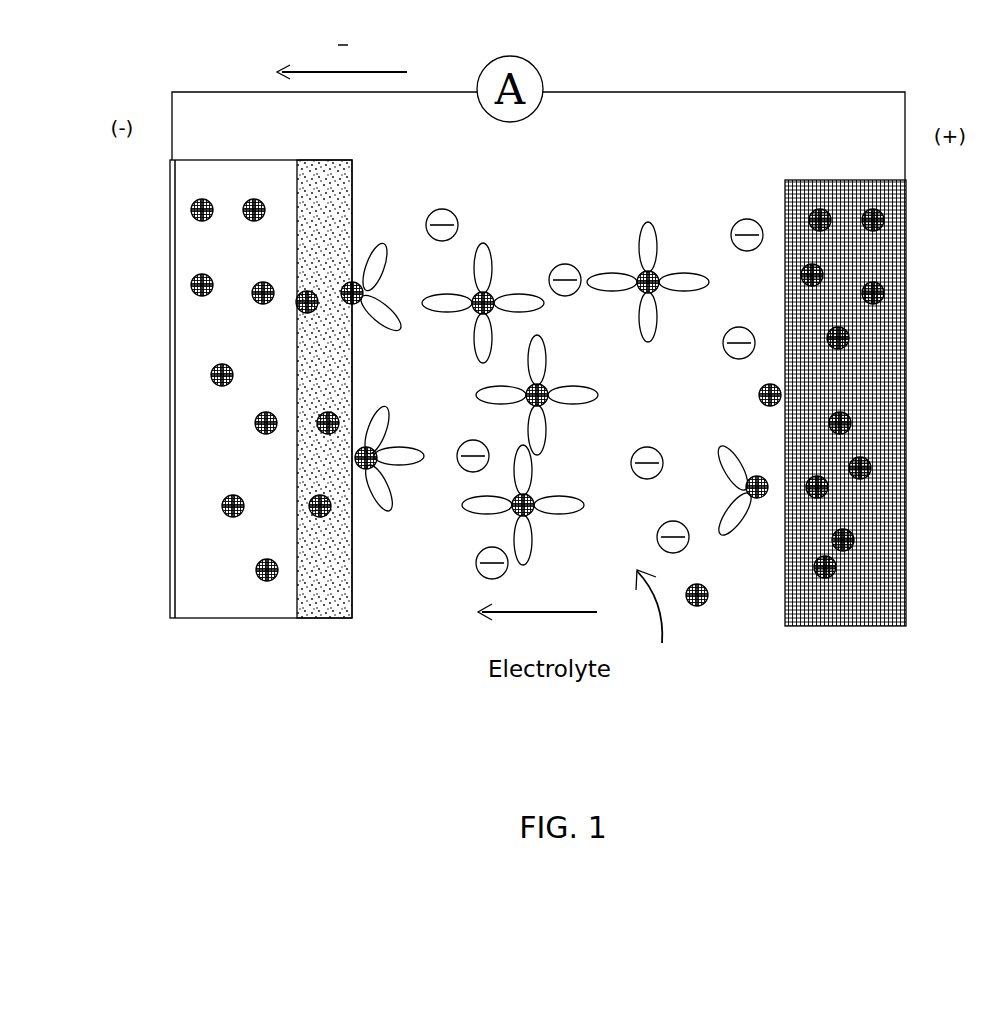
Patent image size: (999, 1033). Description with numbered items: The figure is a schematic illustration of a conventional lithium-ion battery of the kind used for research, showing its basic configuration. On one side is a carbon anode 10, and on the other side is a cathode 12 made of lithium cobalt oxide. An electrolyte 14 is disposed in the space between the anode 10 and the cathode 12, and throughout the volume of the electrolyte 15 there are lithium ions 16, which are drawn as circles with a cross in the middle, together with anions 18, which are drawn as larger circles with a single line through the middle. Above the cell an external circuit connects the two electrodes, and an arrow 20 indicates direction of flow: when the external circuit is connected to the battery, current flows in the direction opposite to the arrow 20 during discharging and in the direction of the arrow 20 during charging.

The anode 10 is at (246, 607).
The cathode 12 is at (843, 598).
The electrolyte 14 is at (387, 428).
The electrolyte 15 is at (654, 626).
The lithium ions 16 is at (267, 212).
The anions 18 is at (563, 263).
The arrow 20 is at (365, 71).